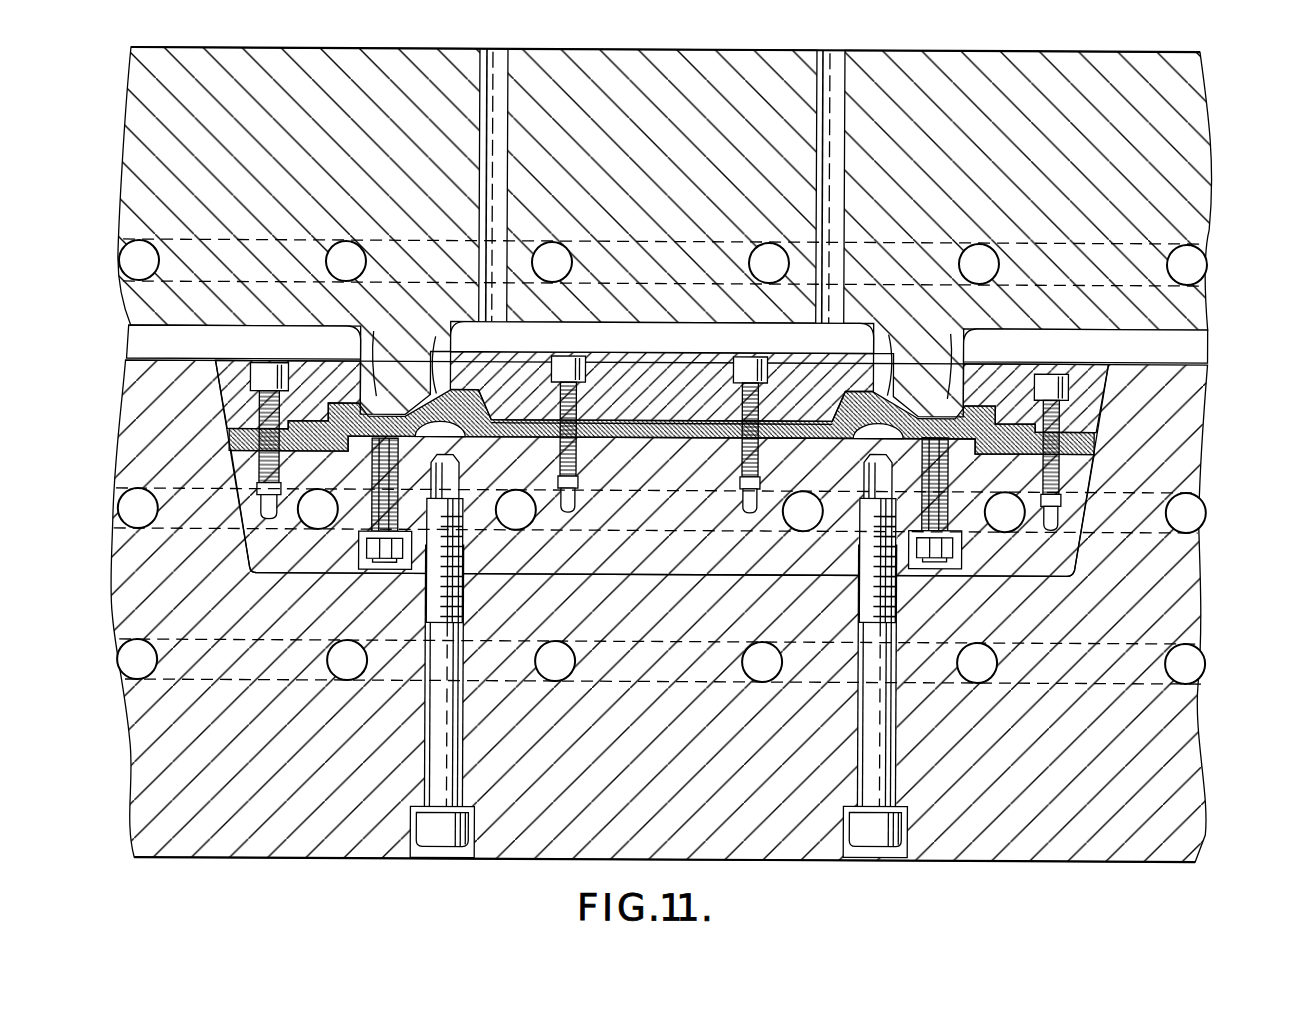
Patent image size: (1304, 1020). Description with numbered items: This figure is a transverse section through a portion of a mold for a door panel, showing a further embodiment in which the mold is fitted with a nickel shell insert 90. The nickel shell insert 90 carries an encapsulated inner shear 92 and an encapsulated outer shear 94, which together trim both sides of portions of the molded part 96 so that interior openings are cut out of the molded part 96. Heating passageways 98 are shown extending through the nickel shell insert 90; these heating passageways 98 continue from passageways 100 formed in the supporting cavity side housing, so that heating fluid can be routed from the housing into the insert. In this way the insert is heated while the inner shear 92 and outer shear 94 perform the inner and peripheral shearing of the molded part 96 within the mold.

The nickel shell insert 90 is at (668, 555).
The encapsulated inner shear 92 is at (437, 335).
The encapsulated outer shear 94 is at (383, 350).
The molded part 96 is at (390, 398).
The heating passageways 98 is at (806, 528).
The passageways 100 is at (1192, 668).